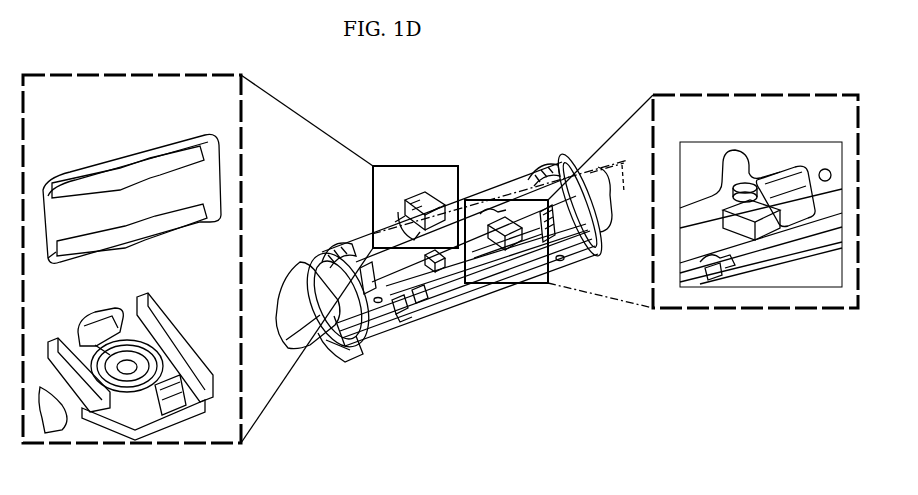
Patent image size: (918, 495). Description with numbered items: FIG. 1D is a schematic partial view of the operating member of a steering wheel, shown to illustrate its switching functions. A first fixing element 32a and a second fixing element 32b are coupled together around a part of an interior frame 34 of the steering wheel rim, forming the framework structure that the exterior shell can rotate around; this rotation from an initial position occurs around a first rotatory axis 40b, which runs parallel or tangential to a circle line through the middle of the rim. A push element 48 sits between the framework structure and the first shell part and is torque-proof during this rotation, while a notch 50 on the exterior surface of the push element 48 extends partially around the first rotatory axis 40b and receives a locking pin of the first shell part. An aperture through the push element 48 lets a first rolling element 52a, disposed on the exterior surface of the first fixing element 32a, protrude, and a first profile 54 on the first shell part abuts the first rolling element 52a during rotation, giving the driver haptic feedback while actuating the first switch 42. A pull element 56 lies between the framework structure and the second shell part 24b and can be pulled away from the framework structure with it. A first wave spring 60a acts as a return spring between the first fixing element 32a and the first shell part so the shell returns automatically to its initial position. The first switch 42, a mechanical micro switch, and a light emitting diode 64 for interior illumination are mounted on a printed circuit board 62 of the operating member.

The second shell part 24b is at (410, 318).
The first fixing element 32a is at (306, 270).
The second fixing element 32b is at (334, 345).
The interior frame 34 is at (288, 305).
The first rotatory axis 40b is at (620, 172).
The first switch 42 is at (445, 290).
The push element 48 is at (494, 190).
The notch 50 is at (346, 258).
The first rolling element 52a is at (430, 192).
The first profile 54 is at (120, 150).
The pull element 56 is at (826, 168).
The first wave spring 60a is at (100, 332).
The printed circuit board 62 is at (488, 265).
The light emitting diode 64 is at (400, 314).